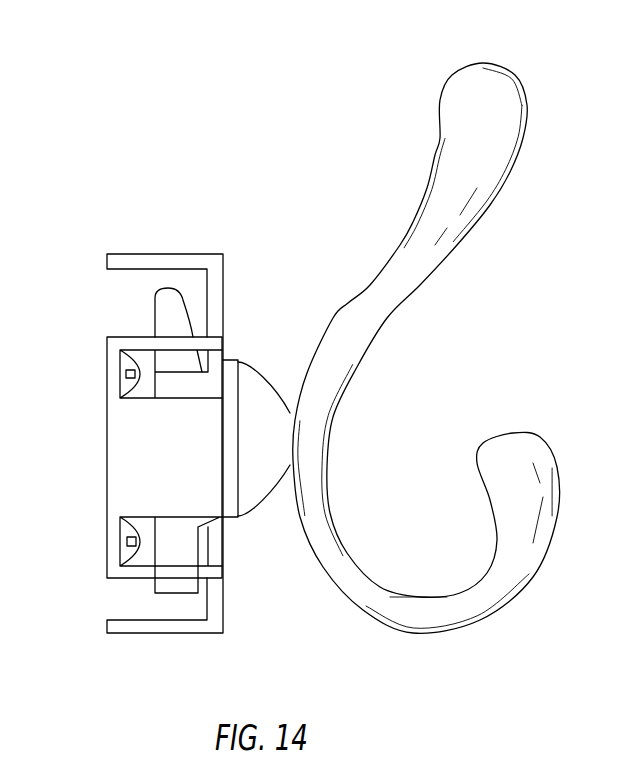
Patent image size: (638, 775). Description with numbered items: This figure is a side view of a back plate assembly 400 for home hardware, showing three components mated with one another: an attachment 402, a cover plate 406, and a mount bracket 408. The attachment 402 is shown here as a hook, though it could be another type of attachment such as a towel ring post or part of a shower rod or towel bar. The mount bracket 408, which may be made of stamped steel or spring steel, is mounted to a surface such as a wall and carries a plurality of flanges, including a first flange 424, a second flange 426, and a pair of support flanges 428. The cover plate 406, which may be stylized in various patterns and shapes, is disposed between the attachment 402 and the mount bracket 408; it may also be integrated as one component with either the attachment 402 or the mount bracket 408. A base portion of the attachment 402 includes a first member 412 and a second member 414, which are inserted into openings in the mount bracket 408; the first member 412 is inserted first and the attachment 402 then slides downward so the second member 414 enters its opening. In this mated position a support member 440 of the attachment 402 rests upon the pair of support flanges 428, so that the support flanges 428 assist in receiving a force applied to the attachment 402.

The back plate assembly 400 is at (301, 336).
The attachment 402 is at (440, 122).
The cover plate 406 is at (153, 245).
The mount bracket 408 is at (170, 422).
The first member 412 is at (183, 300).
The second member 414 is at (190, 587).
The first flange 424 is at (203, 317).
The second flange 426 is at (147, 575).
The support flanges 428 is at (135, 473).
The support member 440 is at (214, 393).